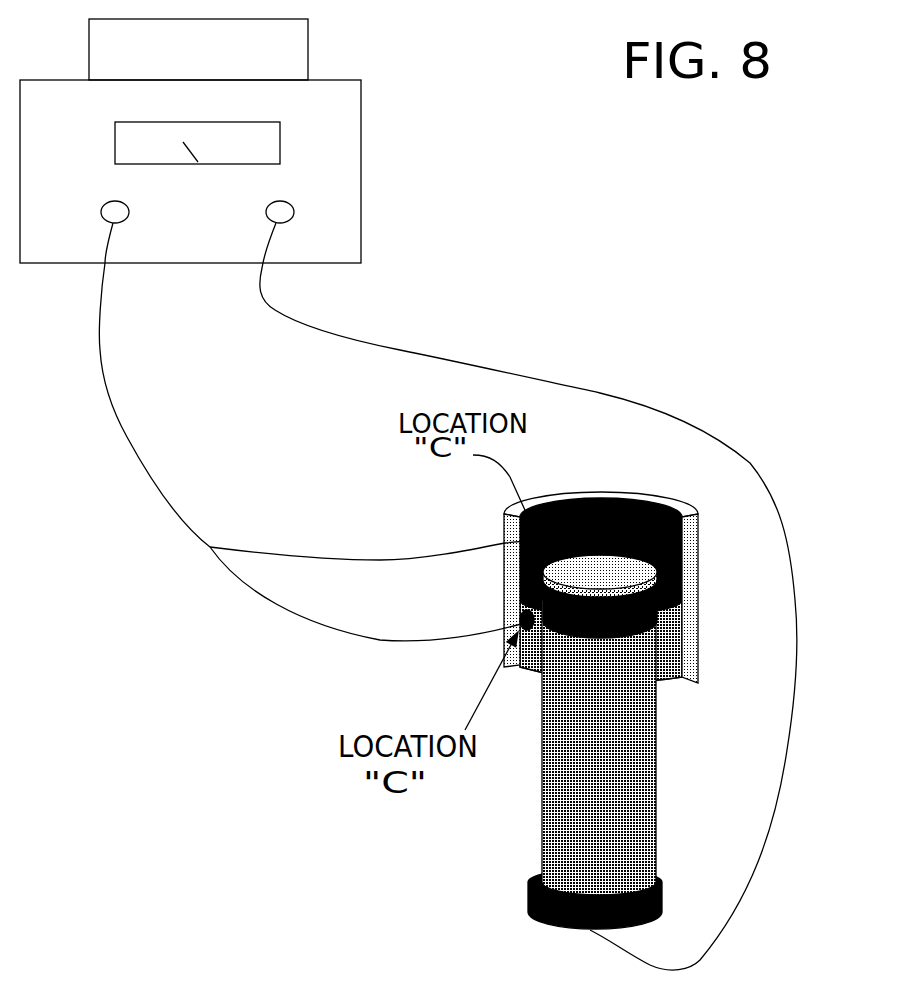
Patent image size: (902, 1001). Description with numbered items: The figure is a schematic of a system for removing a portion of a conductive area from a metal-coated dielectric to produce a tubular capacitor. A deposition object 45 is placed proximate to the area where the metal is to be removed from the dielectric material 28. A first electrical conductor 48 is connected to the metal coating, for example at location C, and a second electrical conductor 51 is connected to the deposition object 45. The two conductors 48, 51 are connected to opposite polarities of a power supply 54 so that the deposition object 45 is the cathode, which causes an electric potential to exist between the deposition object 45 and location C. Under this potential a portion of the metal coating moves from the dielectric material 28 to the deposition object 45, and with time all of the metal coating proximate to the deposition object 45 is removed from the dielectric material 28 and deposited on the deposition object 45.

The power supply 54 is at (361, 139).
The first electrical conductor 48 is at (128, 437).
The second electrical conductor 51 is at (332, 330).
The dielectric material 28 is at (676, 586).
The deposition object 45 is at (620, 617).